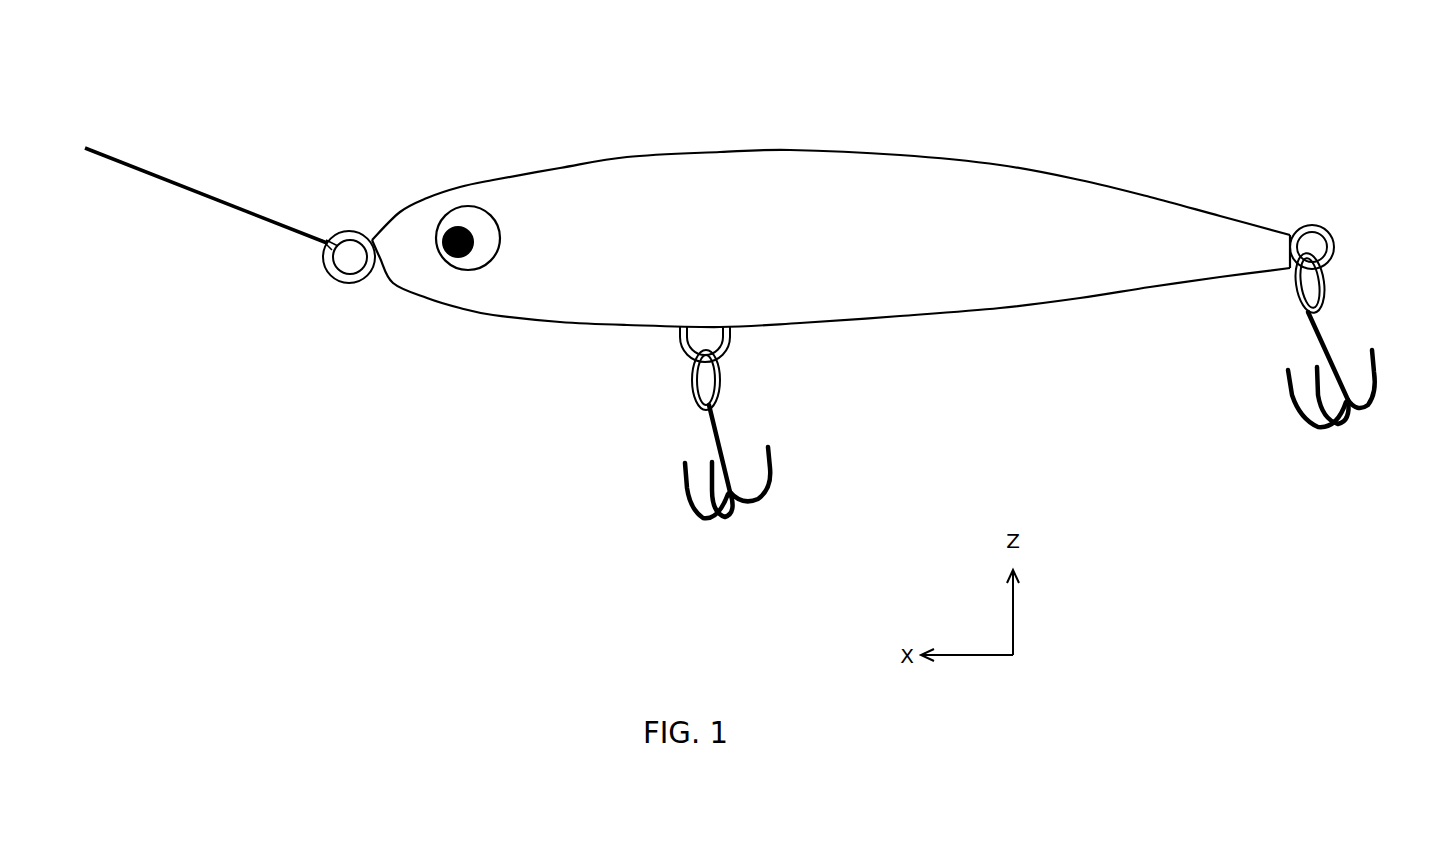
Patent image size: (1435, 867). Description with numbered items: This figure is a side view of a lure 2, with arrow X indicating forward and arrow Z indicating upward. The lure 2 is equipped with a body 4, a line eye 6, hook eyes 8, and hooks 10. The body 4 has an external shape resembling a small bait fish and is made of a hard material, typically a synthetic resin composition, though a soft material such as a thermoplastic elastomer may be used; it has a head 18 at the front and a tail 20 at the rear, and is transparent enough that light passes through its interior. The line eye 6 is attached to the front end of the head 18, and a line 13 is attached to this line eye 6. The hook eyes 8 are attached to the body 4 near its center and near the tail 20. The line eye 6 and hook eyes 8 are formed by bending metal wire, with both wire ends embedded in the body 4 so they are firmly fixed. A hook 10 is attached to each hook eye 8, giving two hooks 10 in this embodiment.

The lure 2 is at (841, 23).
The body 4 is at (629, 157).
The line eye 6 is at (345, 230).
The hook eye 8 is at (690, 360).
The hook 10 is at (713, 520).
The fishing line 13 is at (216, 198).
The head 18 is at (428, 198).
The tail 20 is at (1268, 225).